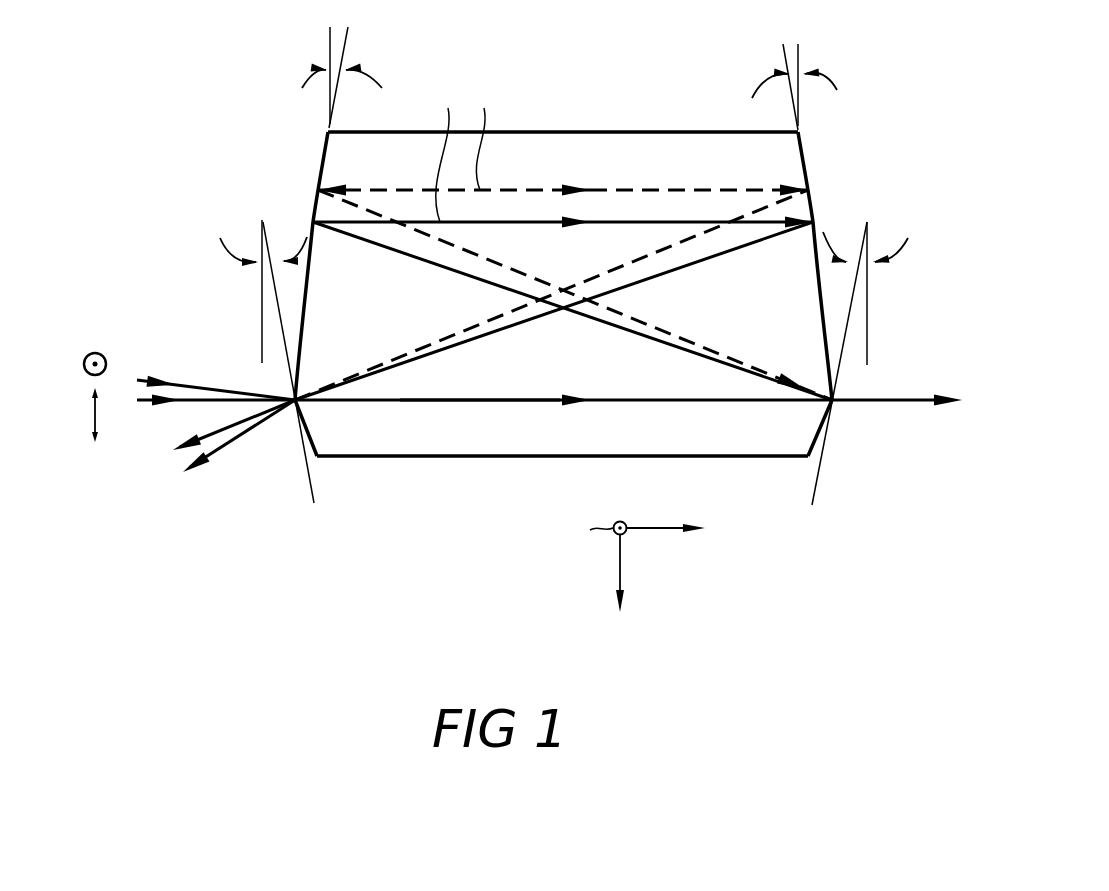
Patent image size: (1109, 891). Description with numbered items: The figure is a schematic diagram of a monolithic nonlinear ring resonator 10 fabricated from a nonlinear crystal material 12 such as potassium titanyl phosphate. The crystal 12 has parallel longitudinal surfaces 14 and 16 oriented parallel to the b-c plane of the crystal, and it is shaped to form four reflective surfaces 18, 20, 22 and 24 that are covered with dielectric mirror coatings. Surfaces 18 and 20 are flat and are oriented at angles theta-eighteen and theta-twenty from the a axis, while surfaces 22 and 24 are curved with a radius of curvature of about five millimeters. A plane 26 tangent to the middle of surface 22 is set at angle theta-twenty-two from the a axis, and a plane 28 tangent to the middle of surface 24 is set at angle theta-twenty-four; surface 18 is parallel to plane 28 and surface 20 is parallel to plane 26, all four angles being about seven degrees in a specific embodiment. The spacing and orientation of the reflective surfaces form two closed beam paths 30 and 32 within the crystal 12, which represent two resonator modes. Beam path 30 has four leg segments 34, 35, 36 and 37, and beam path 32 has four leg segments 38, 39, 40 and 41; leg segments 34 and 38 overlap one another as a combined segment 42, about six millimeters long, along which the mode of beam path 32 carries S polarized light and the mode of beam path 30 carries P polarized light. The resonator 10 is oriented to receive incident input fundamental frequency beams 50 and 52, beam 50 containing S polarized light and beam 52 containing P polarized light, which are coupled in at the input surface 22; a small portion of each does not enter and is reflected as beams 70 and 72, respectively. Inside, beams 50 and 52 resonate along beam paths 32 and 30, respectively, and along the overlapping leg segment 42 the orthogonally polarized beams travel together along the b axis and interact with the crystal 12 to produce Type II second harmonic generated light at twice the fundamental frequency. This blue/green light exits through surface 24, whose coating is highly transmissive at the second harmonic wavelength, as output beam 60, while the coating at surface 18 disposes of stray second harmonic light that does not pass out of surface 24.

The nonlinear resonator 10 is at (268, 553).
The nonlinear crystal material 12 is at (475, 458).
The longitudinal surface 14 is at (392, 458).
The longitudinal surface 16 is at (560, 132).
The reflective surface 18 is at (320, 140).
The reflective surface 20 is at (806, 143).
The reflective surface 22 is at (310, 456).
The reflective surface 24 is at (817, 454).
The plane 26 is at (272, 250).
The plane 28 is at (858, 250).
The closed beam path 30 is at (537, 223).
The closed beam path 32 is at (678, 190).
The leg segment 34 is at (617, 399).
The leg segment 35 is at (428, 261).
The leg segment 36 is at (588, 223).
The leg segment 37 is at (522, 322).
The leg segment 38 is at (587, 404).
The leg segment 39 is at (413, 232).
The leg segment 40 is at (602, 190).
The leg segment 41 is at (473, 328).
The combined segment 42 is at (471, 399).
The input fundamental frequency beam 50 is at (183, 386).
The input fundamental frequency beam 52 is at (231, 398).
The second harmonic output beam 60 is at (910, 399).
The reflected beam 70 is at (218, 450).
The reflected beam 72 is at (262, 416).